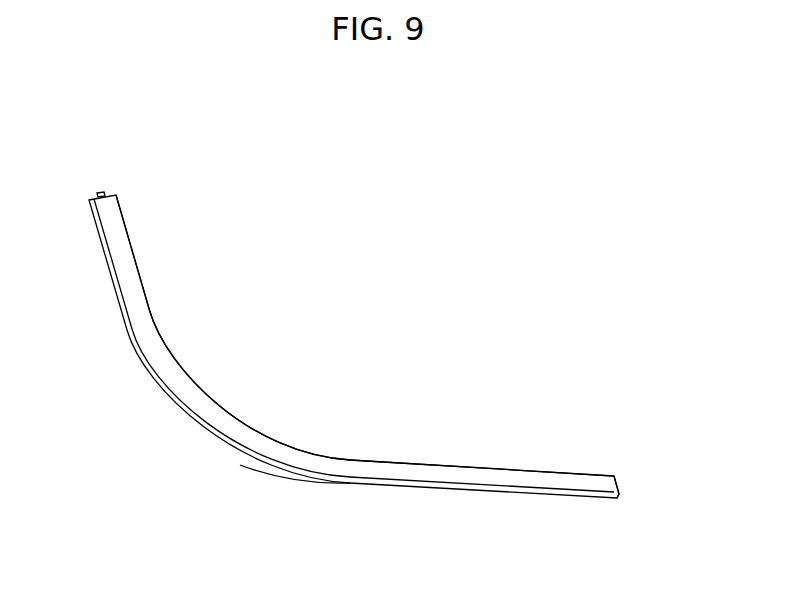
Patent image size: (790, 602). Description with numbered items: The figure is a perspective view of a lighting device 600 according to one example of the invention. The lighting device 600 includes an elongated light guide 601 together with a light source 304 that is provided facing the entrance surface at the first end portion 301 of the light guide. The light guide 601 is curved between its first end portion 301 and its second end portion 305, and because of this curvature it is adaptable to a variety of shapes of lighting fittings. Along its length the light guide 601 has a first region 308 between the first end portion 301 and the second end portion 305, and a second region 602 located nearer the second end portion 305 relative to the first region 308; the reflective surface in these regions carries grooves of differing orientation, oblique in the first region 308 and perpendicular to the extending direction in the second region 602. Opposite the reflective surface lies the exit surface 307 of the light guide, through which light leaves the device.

The lighting device 600 is at (583, 230).
The first end portion 301 is at (120, 204).
The light source 304 is at (102, 191).
The first region 308 is at (140, 272).
The light guide 601 is at (262, 436).
The second region 602 is at (490, 468).
The second end portion 305 is at (613, 476).
The exit surface 307 is at (302, 475).